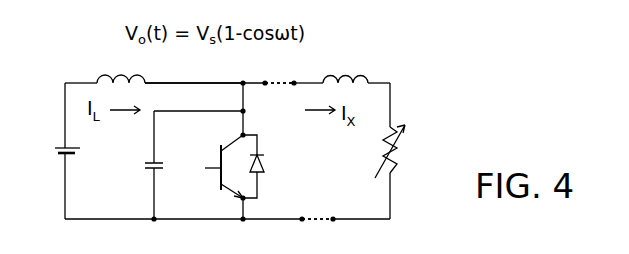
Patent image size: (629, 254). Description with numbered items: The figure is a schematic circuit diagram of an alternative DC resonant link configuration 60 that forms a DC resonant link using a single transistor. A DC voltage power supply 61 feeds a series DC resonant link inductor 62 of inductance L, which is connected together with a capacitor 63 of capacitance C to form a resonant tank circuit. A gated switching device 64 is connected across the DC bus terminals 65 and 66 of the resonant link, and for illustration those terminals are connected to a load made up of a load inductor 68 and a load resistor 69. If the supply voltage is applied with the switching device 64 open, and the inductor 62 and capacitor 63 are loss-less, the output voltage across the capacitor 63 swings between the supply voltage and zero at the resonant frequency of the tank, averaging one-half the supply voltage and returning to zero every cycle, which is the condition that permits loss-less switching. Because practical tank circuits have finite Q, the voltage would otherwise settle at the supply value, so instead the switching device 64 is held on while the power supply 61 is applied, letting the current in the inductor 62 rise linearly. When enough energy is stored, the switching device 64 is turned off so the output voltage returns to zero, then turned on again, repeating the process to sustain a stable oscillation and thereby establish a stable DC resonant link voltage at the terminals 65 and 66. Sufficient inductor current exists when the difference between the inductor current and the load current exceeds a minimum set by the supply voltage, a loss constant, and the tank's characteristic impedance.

The DC resonant link configuration 60 is at (189, 82).
The DC voltage power supply 61 is at (55, 147).
The series DC resonant link inductor 62 is at (97, 79).
The capacitor 63 is at (150, 162).
The gated switching device 64 is at (220, 186).
The DC bus terminal 65 is at (266, 81).
The DC bus terminal 66 is at (305, 222).
The load inductor 68 is at (368, 80).
The load resistor 69 is at (395, 170).